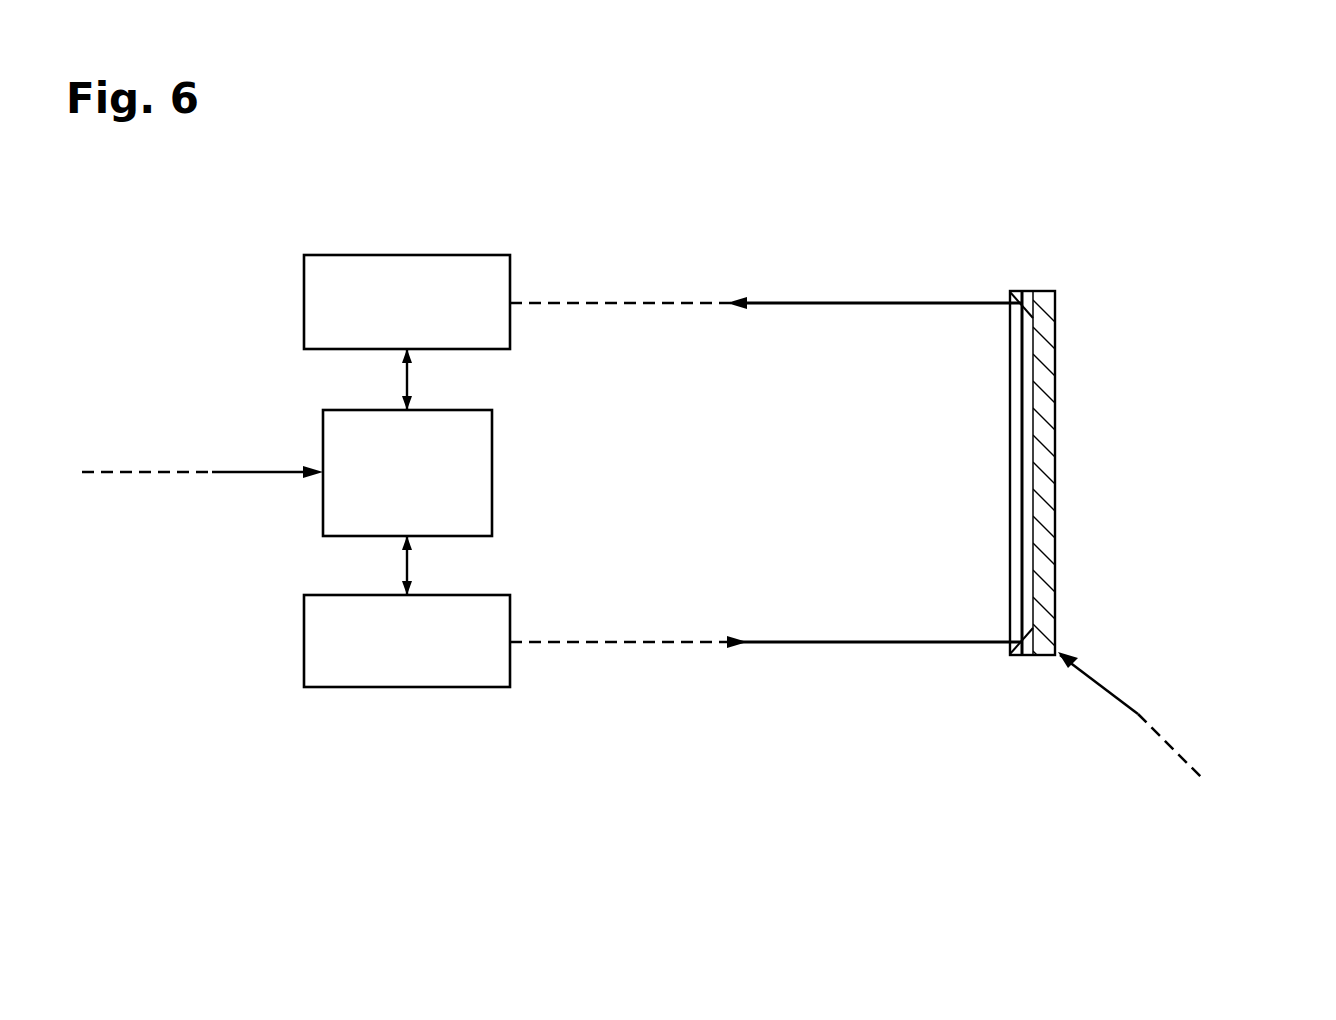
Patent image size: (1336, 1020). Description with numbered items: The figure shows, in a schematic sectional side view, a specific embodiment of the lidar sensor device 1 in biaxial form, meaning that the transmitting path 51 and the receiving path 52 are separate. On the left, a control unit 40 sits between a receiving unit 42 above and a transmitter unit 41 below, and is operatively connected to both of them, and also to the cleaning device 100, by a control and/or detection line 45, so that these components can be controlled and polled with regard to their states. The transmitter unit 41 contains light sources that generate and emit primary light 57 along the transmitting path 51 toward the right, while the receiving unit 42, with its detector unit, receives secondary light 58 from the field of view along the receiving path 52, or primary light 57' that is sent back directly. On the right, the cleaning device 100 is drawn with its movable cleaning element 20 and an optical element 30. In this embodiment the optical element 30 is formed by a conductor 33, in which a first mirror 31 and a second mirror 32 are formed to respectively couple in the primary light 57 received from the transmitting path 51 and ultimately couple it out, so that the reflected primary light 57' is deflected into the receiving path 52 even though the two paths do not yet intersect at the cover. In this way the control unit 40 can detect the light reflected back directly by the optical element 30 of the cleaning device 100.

The lidar sensor device 1 is at (1232, 172).
The cleaning element 20 is at (1043, 305).
The optical element 30 is at (1131, 462).
The first mirror 31 is at (1085, 631).
The second mirror 32 is at (1023, 306).
The conductor 33 is at (1030, 453).
The control unit 40 is at (470, 468).
The transmitter unit 41 is at (397, 677).
The receiver unit 42 is at (398, 287).
The control and/or detection line 45 is at (412, 380).
The transmitting path 51 is at (616, 648).
The receiving path 52 is at (616, 300).
The primary light 57 is at (874, 699).
The reflected primary light 57' is at (874, 249).
The secondary light 58 is at (874, 249).
The cleaning device 100 is at (1173, 445).